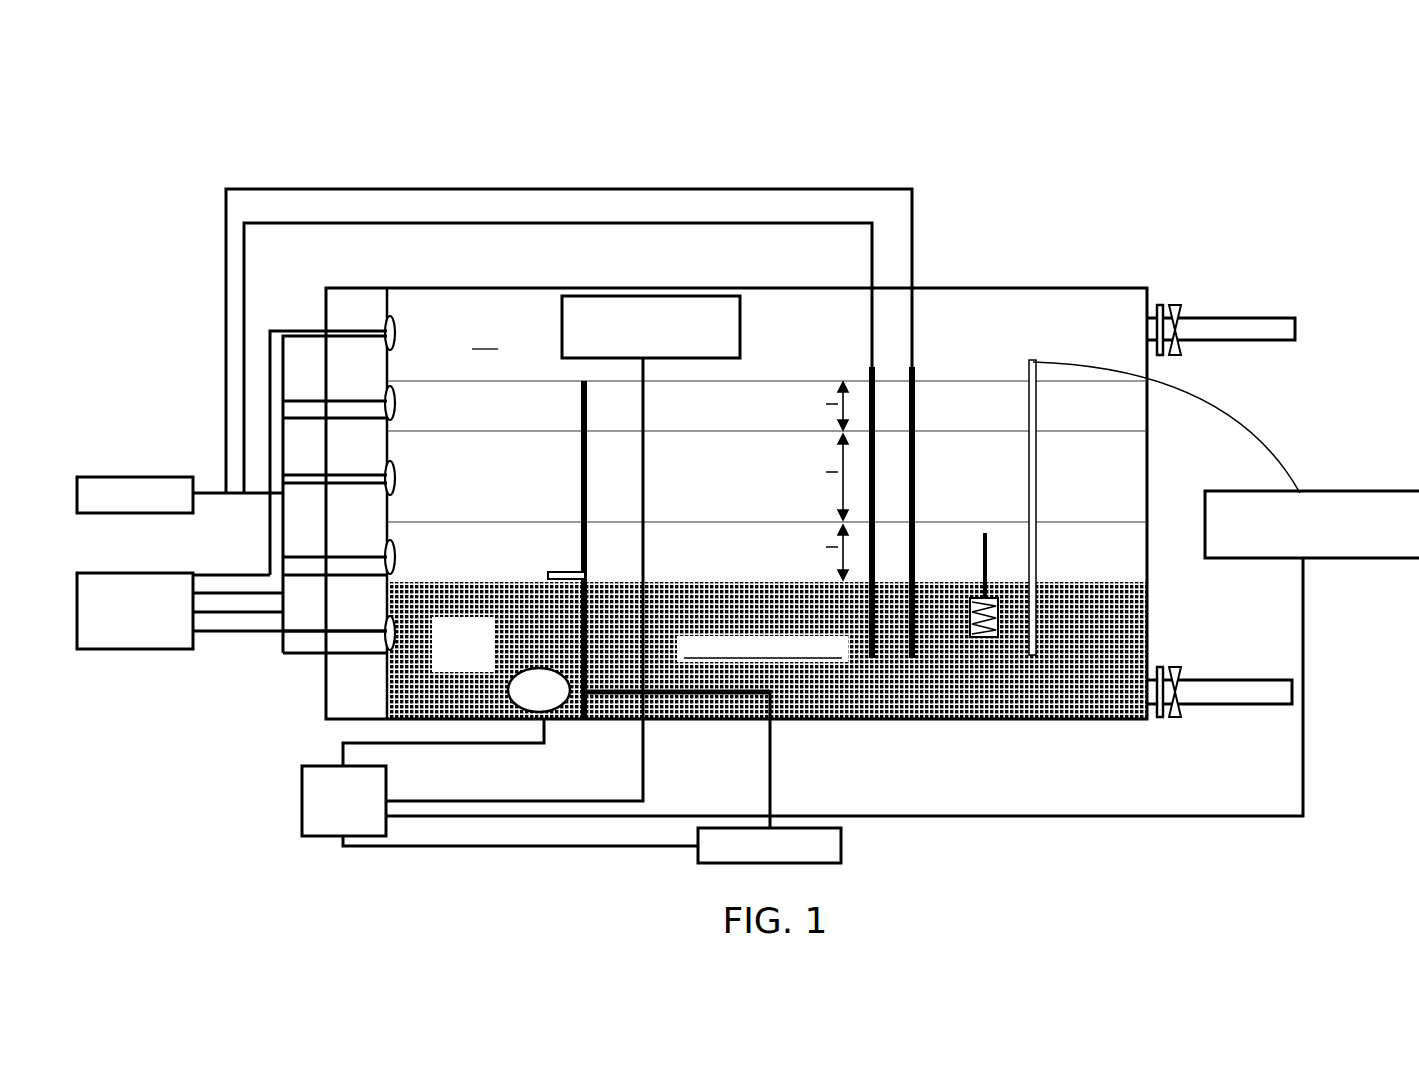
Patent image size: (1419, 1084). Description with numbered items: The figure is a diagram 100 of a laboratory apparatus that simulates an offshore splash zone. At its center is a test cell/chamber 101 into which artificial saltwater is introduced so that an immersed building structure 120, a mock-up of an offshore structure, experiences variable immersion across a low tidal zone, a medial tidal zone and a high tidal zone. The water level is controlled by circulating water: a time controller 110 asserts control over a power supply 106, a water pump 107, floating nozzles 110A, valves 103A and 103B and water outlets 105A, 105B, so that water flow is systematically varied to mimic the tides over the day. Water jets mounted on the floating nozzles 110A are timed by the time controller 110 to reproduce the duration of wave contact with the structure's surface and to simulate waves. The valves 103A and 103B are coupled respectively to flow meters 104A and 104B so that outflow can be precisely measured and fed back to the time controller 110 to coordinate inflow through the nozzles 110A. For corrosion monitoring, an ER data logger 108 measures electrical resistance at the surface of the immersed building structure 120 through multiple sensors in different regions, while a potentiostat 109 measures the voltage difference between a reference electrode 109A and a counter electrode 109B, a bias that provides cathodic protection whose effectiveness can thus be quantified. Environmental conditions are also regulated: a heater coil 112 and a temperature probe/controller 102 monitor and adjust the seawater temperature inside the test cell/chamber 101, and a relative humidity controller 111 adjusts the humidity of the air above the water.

The diagram 100 is at (1240, 132).
The test cell/chamber 101 is at (995, 288).
The temperature probe/controller 102 is at (1412, 548).
The valve 103A is at (1176, 303).
The valve 103B is at (1176, 665).
The flow meter 104A is at (1160, 355).
The flow meter 104B is at (1160, 717).
The water outlet 105A is at (1222, 316).
The water outlet 105B is at (1222, 680).
The power supply 106 is at (500, 824).
The water pump 107 is at (556, 702).
The ER data logger 108 is at (232, 625).
The potentiostat 109 is at (180, 509).
The reference electrode 109A is at (913, 367).
The counter electrode 109B is at (870, 367).
The time controller 110 is at (769, 789).
The floating nozzles 110A is at (578, 572).
The relative humidity controller 111 is at (563, 548).
The heater coil 112 is at (980, 570).
The immersed building structure 120 is at (372, 316).